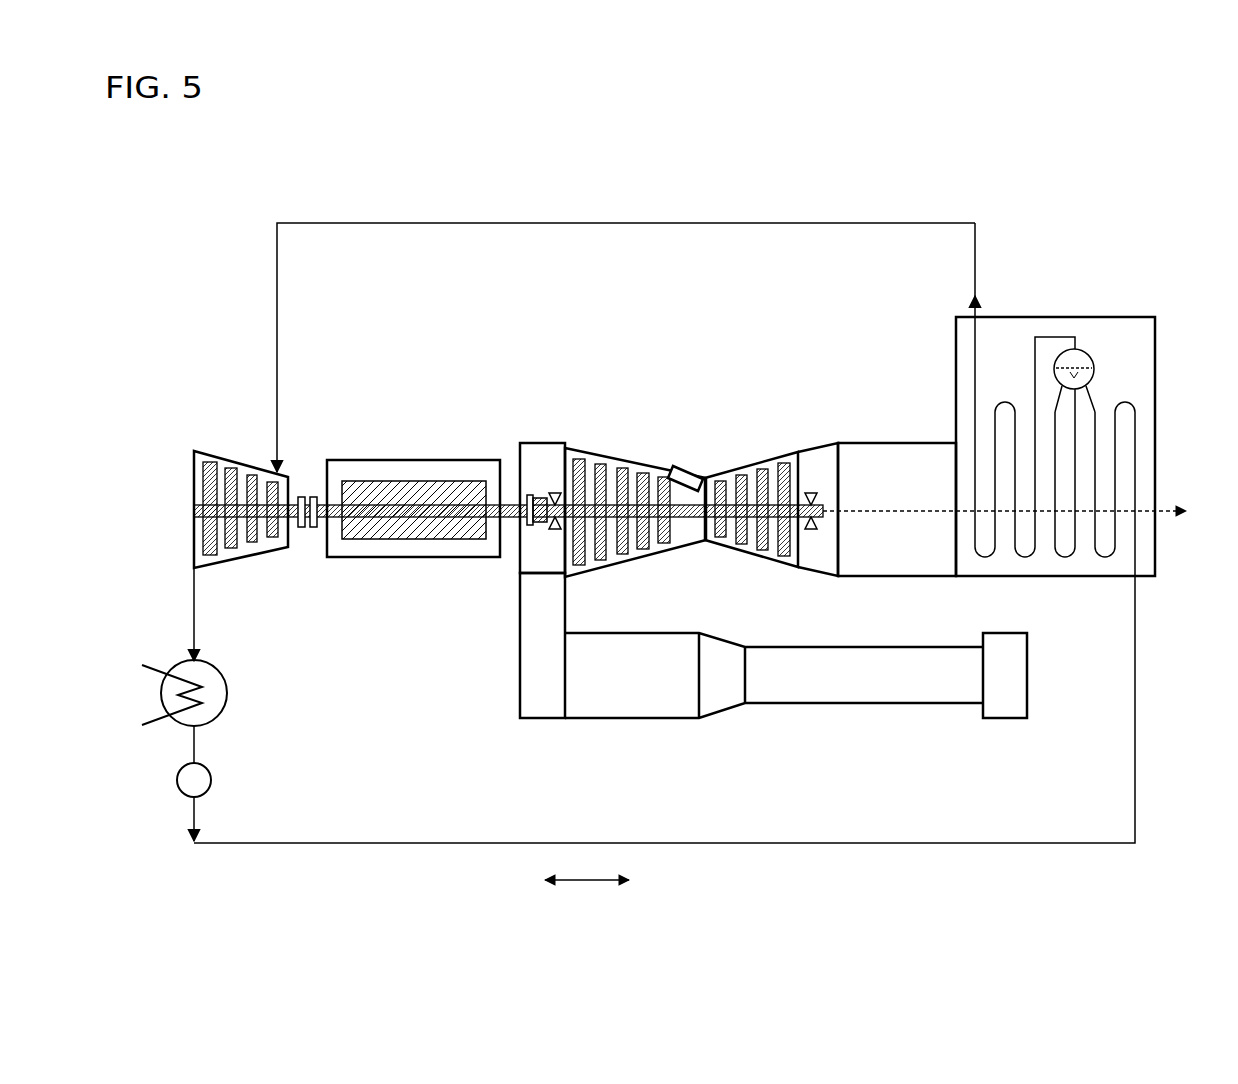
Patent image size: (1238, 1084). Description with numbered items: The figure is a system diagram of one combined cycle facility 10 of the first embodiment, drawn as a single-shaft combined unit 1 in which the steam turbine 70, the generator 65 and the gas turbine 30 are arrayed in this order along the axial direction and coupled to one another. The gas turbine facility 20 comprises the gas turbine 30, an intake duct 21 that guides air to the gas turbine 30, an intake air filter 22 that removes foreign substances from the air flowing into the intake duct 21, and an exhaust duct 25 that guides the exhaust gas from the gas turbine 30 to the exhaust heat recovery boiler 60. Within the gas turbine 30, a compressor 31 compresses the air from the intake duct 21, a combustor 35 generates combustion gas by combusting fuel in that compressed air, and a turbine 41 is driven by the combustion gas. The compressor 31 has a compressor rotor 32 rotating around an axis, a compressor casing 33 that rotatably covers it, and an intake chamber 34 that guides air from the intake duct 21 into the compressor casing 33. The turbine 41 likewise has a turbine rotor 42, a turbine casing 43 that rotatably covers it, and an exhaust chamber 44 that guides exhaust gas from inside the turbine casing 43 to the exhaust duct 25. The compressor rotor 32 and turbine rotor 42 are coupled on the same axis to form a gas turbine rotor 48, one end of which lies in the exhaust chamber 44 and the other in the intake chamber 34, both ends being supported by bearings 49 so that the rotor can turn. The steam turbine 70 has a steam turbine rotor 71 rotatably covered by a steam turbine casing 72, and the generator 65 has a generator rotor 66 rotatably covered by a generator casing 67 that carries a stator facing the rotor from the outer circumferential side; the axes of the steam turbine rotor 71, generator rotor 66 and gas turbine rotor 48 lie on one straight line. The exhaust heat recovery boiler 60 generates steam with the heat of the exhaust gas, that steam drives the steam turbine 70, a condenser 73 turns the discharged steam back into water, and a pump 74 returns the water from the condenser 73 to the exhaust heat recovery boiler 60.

The single-shaft combined unit 1 is at (179, 323).
The combined cycle facility 10 is at (1095, 192).
The gas turbine facility 20 is at (494, 677).
The intake duct 21 is at (797, 705).
The intake air filter 22 is at (1000, 720).
The exhaust duct 25 is at (905, 578).
The gas turbine 30 is at (510, 564).
The compressor 31 is at (577, 438).
The compressor rotor 32 is at (592, 478).
The compressor casing 33 is at (628, 458).
The intake chamber 34 is at (553, 441).
The combustor 35 is at (699, 463).
The turbine 41 is at (709, 553).
The turbine rotor 42 is at (752, 520).
The turbine casing 43 is at (764, 540).
The exhaust chamber 44 is at (805, 448).
The gas turbine rotor 48 is at (693, 541).
The bearing 49 is at (548, 488).
The exhaust heat recovery boiler 60 is at (1137, 310).
The generator 65 is at (346, 456).
The generator rotor 66 is at (441, 480).
The generator casing 67 is at (392, 458).
The steam turbine 70 is at (184, 448).
The steam turbine rotor 71 is at (265, 504).
The steam turbine casing 72 is at (213, 460).
The condenser 73 is at (232, 693).
The pump 74 is at (212, 780).